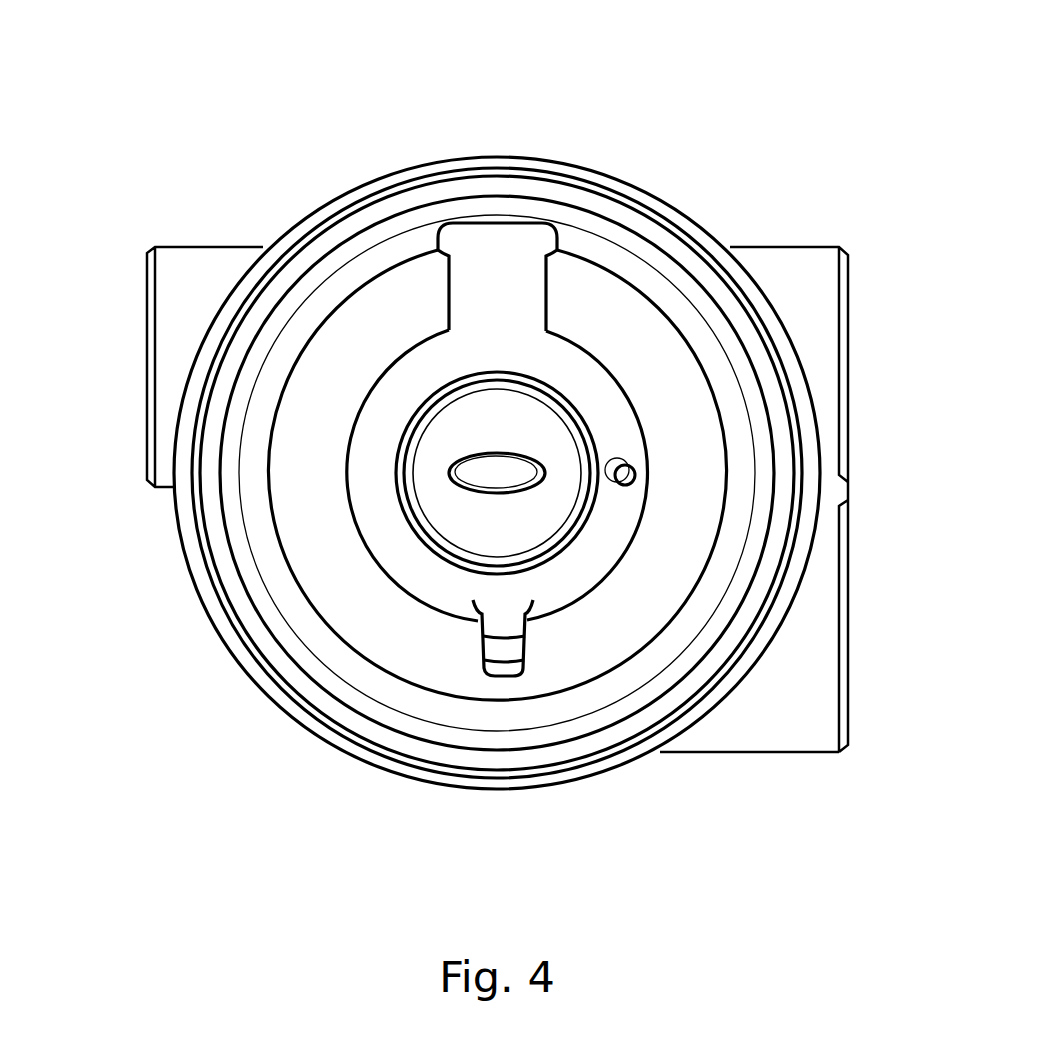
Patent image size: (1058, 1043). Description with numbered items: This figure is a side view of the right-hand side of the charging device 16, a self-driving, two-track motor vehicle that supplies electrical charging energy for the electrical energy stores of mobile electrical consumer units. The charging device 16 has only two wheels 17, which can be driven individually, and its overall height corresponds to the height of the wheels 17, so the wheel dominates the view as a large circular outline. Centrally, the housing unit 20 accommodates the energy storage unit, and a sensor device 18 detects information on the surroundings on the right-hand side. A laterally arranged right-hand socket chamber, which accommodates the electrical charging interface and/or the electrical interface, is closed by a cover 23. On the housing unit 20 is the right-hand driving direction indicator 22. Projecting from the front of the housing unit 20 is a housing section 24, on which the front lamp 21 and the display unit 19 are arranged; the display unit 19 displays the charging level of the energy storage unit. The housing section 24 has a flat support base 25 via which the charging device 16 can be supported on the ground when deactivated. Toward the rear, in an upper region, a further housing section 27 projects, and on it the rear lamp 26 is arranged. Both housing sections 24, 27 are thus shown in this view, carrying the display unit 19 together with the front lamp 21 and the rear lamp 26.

The charging device 16 is at (615, 122).
The wheels 17 is at (497, 156).
The sensor device 18 is at (628, 476).
The display unit 19 is at (848, 325).
The housing unit 20 is at (789, 240).
The front lamp 21 is at (848, 637).
The right-hand driving direction indicator 22 is at (499, 678).
The cover 23 is at (468, 520).
The housing section 24 is at (816, 714).
The flat support base 25 is at (752, 755).
The rear lamp 26 is at (147, 293).
The housing section 27 is at (182, 278).